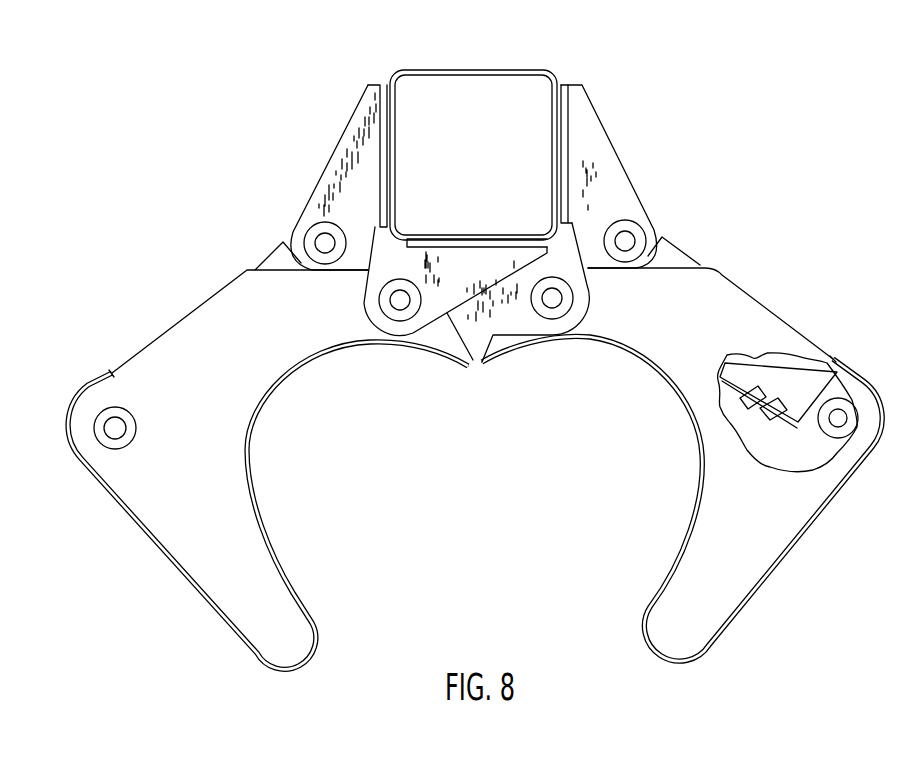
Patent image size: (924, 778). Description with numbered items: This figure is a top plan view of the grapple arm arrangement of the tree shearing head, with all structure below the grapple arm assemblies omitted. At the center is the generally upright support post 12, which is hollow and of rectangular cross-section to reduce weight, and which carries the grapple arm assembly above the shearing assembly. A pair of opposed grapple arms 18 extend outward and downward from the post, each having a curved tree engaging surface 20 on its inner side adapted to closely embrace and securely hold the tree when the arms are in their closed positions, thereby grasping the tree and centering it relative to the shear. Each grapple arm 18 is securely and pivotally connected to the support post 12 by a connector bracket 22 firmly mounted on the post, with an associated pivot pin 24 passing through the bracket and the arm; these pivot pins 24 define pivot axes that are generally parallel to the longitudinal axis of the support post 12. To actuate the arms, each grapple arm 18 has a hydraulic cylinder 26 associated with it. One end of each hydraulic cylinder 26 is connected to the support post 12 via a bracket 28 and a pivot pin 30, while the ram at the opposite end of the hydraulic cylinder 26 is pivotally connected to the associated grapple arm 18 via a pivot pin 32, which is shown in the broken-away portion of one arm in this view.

The support post 12 is at (544, 69).
The grapple arm 18 is at (237, 468).
The curved tree engaging surface 20 is at (266, 400).
The connector bracket 22 is at (413, 337).
The pivot pin 24 is at (398, 306).
The hydraulic cylinder 26 is at (268, 262).
The bracket 28 is at (617, 177).
The pivot pin 30 is at (626, 240).
The pivot pin 32 is at (840, 417).